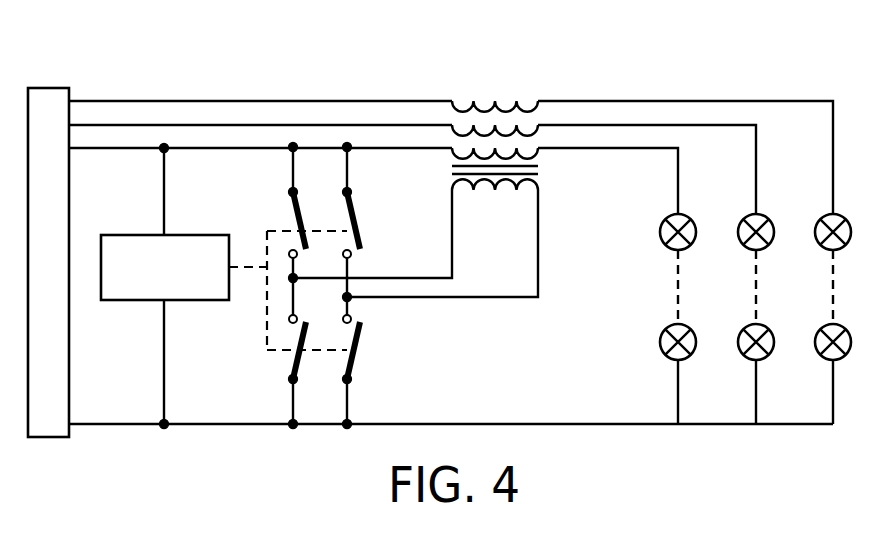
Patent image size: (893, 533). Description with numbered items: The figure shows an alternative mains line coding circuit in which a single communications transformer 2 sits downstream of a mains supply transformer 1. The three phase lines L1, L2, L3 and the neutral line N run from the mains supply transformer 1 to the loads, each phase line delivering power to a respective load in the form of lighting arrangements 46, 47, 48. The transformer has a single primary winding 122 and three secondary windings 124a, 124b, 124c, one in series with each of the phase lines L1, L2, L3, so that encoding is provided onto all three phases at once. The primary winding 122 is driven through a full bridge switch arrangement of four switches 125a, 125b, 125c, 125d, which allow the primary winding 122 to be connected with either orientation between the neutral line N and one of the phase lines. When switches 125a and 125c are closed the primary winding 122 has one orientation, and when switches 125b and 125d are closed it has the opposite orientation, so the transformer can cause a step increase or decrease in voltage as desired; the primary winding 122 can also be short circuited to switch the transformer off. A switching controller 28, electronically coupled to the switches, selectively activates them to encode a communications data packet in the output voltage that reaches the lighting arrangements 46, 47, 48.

The mains supply transformer 1 is at (47, 88).
The communications transformer 2 is at (460, 163).
The switching controller 28 is at (125, 235).
The lighting arrangement 46 is at (693, 207).
The lighting arrangement 47 is at (770, 207).
The lighting arrangement 48 is at (846, 207).
The primary winding 122 is at (540, 190).
The secondary winding 124a is at (461, 158).
The secondary winding 124b is at (505, 135).
The secondary winding 124c is at (528, 110).
The switch 125a is at (352, 213).
The switch 125b is at (352, 362).
The switch 125c is at (298, 362).
The switch 125d is at (298, 213).
The phase line L1 is at (622, 148).
The phase line L2 is at (665, 125).
The phase line L3 is at (710, 101).
The neutral line N is at (543, 424).